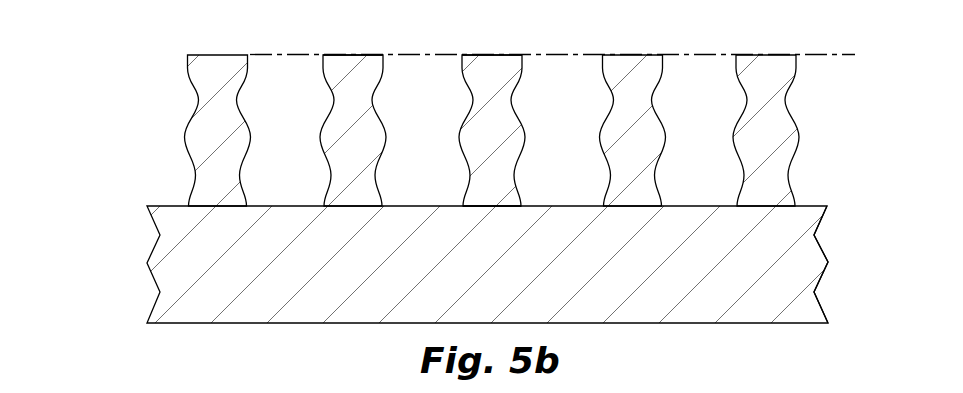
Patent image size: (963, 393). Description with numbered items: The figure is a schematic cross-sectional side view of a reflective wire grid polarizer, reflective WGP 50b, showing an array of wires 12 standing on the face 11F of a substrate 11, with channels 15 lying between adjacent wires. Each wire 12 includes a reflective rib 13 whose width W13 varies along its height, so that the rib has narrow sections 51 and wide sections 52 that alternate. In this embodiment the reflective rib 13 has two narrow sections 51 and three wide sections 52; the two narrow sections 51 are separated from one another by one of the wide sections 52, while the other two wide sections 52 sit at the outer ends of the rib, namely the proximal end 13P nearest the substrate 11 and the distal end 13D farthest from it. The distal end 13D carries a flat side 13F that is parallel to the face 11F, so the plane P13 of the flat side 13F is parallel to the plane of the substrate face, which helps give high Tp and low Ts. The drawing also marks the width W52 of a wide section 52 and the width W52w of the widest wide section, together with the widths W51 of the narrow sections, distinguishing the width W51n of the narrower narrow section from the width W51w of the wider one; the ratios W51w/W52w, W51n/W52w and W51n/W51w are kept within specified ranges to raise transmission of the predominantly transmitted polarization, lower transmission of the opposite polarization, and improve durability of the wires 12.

The substrate 11 is at (503, 297).
The face of the substrate 11F is at (806, 207).
The wire 12 is at (84, 140).
The reflective rib 13 is at (197, 68).
The flat side of the reflective rib 13F is at (359, 58).
The distal end of the reflective rib 13D is at (490, 55).
The proximal end of the reflective rib 13P is at (493, 196).
The channel 15 is at (558, 181).
The reflective WGP 50b is at (91, 279).
The narrow section 51 is at (210, 103).
The wide section 52 is at (242, 204).
The plane of the flat side of the reflective rib P13 is at (852, 55).
The width of the reflective rib W13 is at (290, 227).
The width of the narrow sections W51 is at (714, 103).
The width of the narrower of the narrow sections W51n is at (303, 103).
The width of the wider of the narrow sections W51w is at (303, 175).
The width of the wide section W52 is at (667, 138).
The width of the widest of the wide sections W52w is at (700, 138).